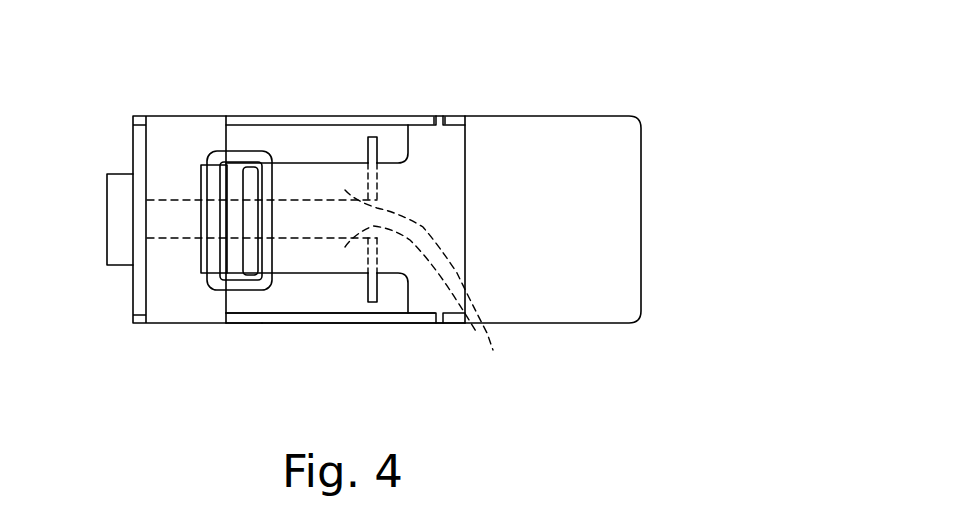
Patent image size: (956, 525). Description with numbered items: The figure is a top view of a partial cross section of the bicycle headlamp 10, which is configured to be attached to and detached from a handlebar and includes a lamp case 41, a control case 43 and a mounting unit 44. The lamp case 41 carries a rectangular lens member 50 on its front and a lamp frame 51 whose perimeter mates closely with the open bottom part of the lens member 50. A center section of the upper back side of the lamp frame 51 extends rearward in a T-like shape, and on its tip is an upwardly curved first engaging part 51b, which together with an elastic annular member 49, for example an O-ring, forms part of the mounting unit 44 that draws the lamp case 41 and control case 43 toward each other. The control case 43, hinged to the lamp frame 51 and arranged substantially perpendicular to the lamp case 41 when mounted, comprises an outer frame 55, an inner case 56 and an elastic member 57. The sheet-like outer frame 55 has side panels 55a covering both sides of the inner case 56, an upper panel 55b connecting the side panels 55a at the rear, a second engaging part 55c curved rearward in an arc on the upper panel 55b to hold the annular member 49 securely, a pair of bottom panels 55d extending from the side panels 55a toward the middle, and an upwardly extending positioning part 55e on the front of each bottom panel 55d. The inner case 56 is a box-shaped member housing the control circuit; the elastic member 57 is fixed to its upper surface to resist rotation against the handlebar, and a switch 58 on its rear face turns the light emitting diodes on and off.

The headlamp 10 is at (656, 181).
The lamp case 41 is at (627, 140).
The control case 43 is at (244, 327).
The mounting unit 44 is at (281, 167).
The annular member 49 is at (246, 158).
The lens member 50 is at (563, 128).
The lamp frame 51 is at (444, 122).
The first engaging part 51b is at (250, 245).
The outer frame 55 is at (267, 326).
The side panels 55a is at (310, 325).
The upper panel 55b is at (163, 282).
The second engaging part 55c is at (208, 186).
The bottom panels 55d is at (444, 285).
The positioning part 55e is at (379, 140).
The inner case 56 is at (335, 302).
The elastic member 57 is at (348, 285).
The switch 58 is at (106, 240).